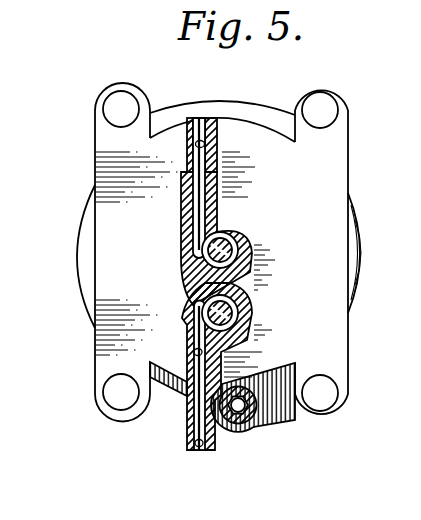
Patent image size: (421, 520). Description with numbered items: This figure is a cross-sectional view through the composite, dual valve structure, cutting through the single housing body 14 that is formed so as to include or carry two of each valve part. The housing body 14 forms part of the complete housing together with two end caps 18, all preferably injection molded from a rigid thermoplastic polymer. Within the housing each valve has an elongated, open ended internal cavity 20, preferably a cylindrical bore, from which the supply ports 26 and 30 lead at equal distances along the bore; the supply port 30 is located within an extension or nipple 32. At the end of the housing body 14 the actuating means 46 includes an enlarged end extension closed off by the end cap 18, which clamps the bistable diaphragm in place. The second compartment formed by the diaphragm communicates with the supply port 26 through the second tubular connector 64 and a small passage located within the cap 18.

The housing body 14 is at (176, 215).
The end cap 18 is at (236, 101).
The internal cavity 20 is at (246, 250).
The supply port 26 is at (47, 177).
The supply port 30 is at (207, 146).
The nipple 32 is at (186, 149).
The actuating means 46 is at (102, 289).
The second tubular connector 64 is at (260, 420).